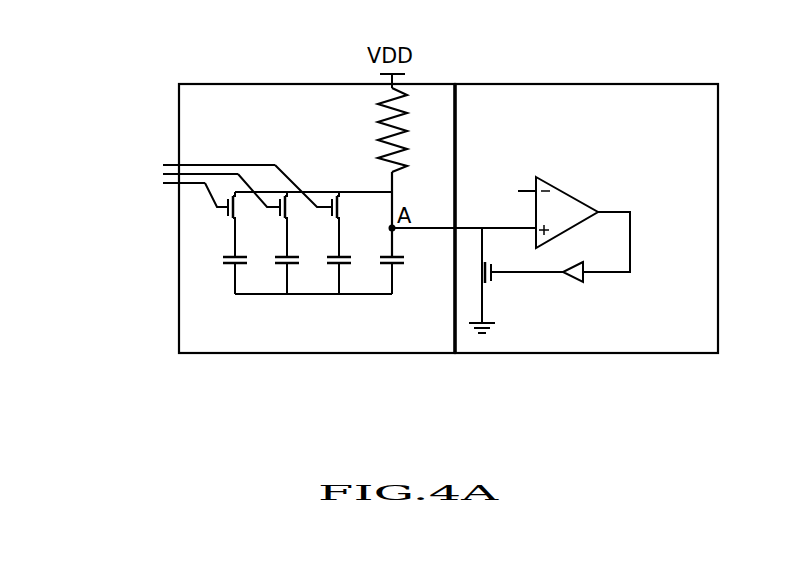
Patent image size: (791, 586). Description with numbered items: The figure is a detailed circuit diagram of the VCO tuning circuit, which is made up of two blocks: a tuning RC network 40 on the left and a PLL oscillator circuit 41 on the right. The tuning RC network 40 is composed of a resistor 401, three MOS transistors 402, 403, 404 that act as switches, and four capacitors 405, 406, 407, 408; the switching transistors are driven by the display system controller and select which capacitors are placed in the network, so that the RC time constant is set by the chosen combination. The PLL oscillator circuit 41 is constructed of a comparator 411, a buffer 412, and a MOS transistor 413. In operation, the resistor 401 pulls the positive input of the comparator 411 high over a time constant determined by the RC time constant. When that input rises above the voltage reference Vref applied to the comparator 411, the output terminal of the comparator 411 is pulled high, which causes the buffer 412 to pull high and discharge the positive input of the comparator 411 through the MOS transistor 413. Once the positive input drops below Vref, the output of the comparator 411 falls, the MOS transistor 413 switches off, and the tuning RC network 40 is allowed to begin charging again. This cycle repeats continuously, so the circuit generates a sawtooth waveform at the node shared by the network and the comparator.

The tuning RC network 40 is at (252, 84).
The PLL oscillator circuit 41 is at (530, 84).
The resistor 401 is at (369, 158).
The MOS transistor 402 is at (218, 216).
The MOS transistor 403 is at (279, 222).
The MOS transistor 404 is at (333, 222).
The capacitor 405 is at (230, 268).
The capacitor 406 is at (282, 268).
The capacitor 407 is at (334, 268).
The capacitor 408 is at (388, 268).
The comparator 411 is at (565, 188).
The buffer 412 is at (572, 282).
The MOS transistor 413 is at (487, 280).